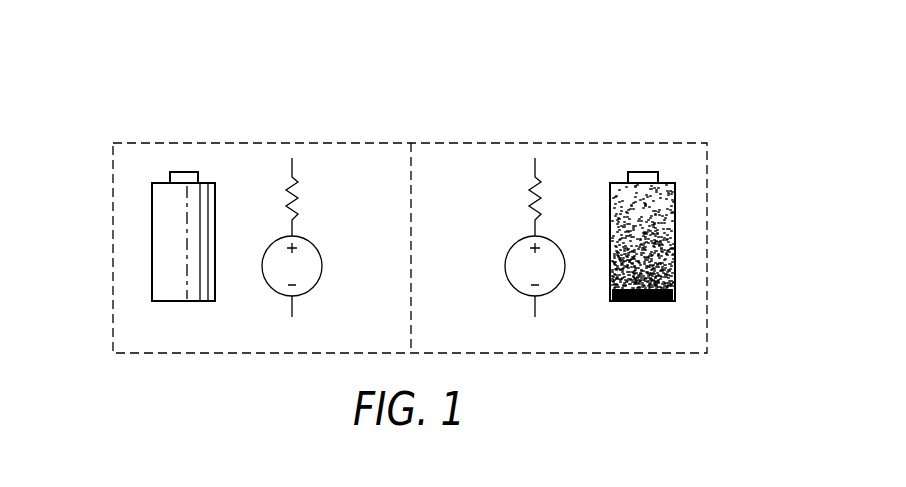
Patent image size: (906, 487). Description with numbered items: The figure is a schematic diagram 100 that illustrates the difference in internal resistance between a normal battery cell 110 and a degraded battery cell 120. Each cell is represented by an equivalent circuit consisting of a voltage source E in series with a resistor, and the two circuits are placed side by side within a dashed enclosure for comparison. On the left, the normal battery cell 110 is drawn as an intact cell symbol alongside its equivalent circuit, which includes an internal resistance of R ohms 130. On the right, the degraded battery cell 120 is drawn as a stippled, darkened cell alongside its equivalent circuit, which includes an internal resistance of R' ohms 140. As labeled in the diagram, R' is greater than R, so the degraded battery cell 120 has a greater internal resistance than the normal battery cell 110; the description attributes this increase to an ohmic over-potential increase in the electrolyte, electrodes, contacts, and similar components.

The schematic diagram 100 is at (637, 70).
The normal battery cell 110 is at (152, 242).
The degraded battery cell 120 is at (675, 235).
The internal resistance of R ohms 130 is at (330, 197).
The internal resistance of R' ohms 140 is at (471, 178).